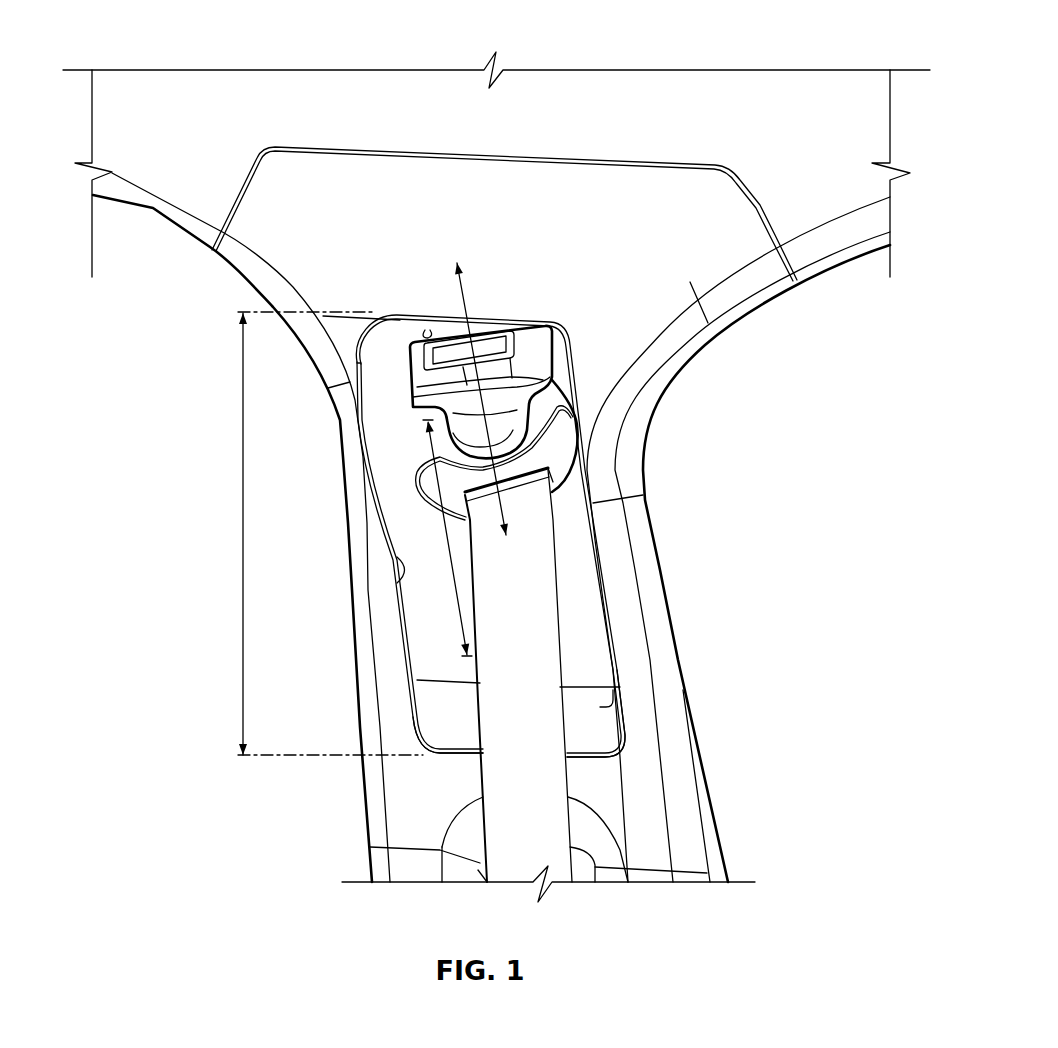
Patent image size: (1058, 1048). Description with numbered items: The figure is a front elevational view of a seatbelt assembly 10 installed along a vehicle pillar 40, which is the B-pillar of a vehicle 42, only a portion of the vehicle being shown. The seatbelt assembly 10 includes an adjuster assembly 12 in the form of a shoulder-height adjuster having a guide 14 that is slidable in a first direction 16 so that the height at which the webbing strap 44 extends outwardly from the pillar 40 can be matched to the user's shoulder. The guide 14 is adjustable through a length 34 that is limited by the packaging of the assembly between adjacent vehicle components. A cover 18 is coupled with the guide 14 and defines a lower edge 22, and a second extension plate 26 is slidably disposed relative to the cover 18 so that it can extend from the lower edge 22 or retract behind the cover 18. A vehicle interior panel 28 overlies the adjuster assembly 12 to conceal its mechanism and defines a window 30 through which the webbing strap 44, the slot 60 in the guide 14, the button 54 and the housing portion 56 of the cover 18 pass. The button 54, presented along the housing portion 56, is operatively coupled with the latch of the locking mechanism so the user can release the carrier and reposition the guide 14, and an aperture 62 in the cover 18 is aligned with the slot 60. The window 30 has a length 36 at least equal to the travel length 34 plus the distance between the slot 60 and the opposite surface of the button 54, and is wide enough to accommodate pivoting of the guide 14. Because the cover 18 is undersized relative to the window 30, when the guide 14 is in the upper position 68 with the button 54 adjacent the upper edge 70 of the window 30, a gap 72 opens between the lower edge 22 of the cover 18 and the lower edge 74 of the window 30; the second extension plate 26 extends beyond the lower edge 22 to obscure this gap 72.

The seatbelt assembly 10 is at (580, 585).
The adjuster assembly 12 is at (548, 400).
The guide 14 is at (552, 445).
The first direction 16 is at (525, 352).
The cover 18 is at (595, 622).
The lower edge 22 is at (600, 703).
The second extension plate 26 is at (607, 722).
The vehicle interior panel 28 is at (663, 793).
The window 30 is at (403, 580).
The length 34 is at (453, 607).
The length 36 is at (243, 490).
The vehicle pillar 40 is at (725, 335).
The vehicle 42 is at (732, 43).
The webbing strap 44 is at (513, 777).
The button 54 is at (482, 342).
The housing portion 56 is at (530, 340).
The slot 60 is at (543, 467).
The aperture 62 is at (433, 507).
The upper position 68 is at (582, 362).
The upper edge 70 is at (425, 330).
The gap 72 is at (438, 694).
The lower edge 74 is at (457, 733).